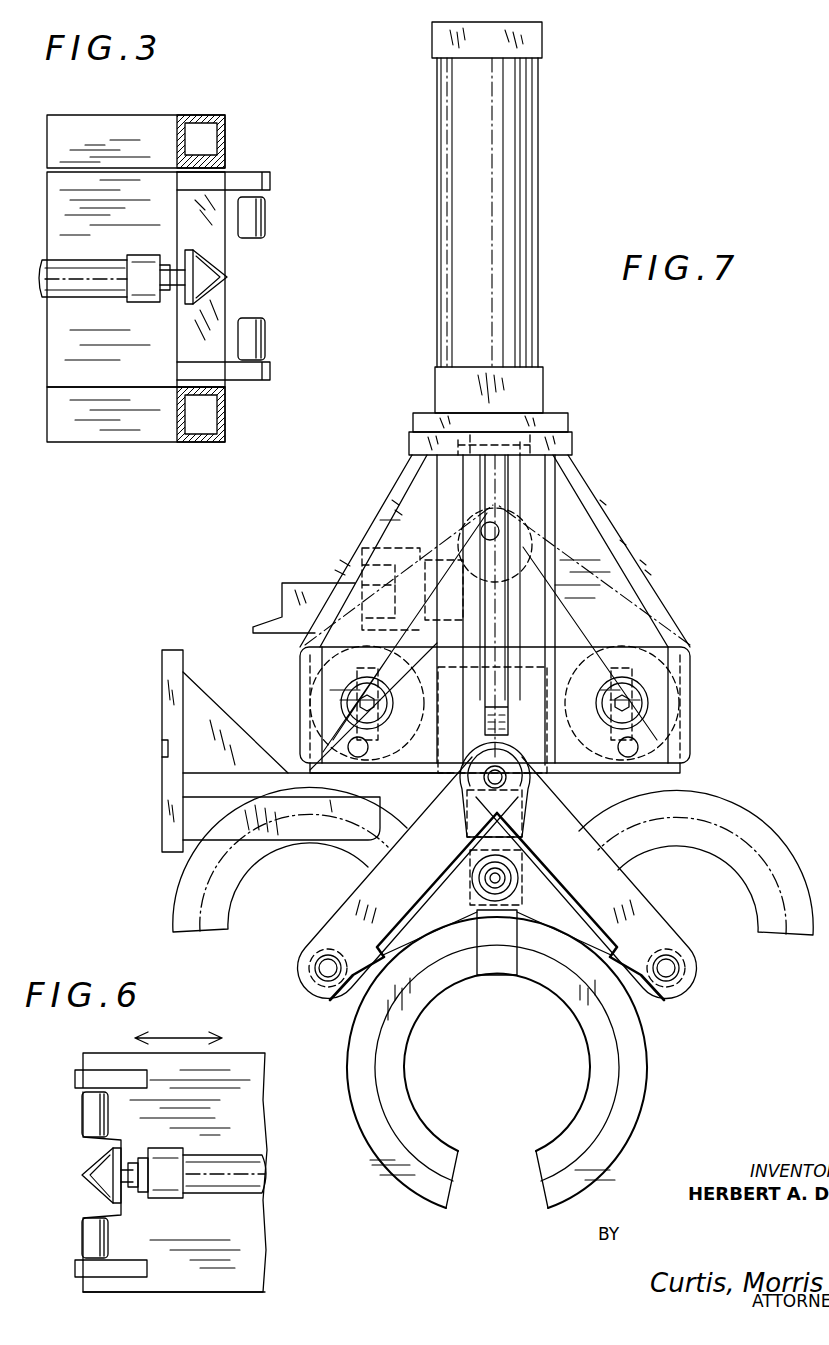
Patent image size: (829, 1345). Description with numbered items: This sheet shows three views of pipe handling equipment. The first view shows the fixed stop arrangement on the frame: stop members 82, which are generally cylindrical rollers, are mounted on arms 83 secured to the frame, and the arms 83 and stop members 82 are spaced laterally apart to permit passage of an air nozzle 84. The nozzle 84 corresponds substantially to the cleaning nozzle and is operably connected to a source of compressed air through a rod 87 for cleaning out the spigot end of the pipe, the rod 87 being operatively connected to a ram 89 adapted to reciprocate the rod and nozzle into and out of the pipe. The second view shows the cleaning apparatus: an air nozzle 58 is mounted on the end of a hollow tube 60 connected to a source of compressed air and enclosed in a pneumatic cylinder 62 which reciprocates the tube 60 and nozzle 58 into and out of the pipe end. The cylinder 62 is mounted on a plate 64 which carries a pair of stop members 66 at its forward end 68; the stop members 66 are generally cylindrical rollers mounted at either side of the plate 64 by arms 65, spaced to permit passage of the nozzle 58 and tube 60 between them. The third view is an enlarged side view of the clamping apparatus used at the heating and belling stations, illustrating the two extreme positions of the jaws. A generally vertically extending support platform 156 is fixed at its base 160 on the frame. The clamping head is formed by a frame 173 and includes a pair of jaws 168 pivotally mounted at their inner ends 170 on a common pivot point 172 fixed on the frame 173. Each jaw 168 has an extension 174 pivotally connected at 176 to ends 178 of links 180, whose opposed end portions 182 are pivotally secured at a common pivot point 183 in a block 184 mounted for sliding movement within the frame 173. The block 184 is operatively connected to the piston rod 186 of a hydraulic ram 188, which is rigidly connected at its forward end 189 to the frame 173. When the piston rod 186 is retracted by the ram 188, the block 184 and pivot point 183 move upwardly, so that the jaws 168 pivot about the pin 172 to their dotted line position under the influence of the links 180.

In FIG. 3, the arms 83 is at (262, 176).
In FIG. 3, the stop members 82 is at (265, 232).
In FIG. 3, the ram 89 is at (84, 268).
In FIG. 3, the rod 87 is at (183, 270).
In FIG. 3, the air nozzle 84 is at (193, 298).
In FIG. 6, the air nozzle 84 is at (117, 1158).
In FIG. 6, the arms 65 is at (75, 1080).
In FIG. 6, the stop members 66 is at (90, 1112).
In FIG. 6, the air nozzle 58 is at (82, 1178).
In FIG. 6, the hollow tube 60 is at (128, 1192).
In FIG. 6, the pneumatic cylinder 62 is at (243, 1165).
In FIG. 6, the plate 64 is at (242, 1268).
In FIG. 6, the forward end 68 is at (105, 1292).
In FIG. 7, the hydraulic ram 188 is at (527, 180).
In FIG. 7, the forward end 189 is at (553, 420).
In FIG. 7, the piston rod 186 is at (495, 476).
In FIG. 7, the block 184 is at (507, 712).
In FIG. 7, the frame 173 is at (690, 727).
In FIG. 7, the common pivot point 183 is at (482, 774).
In FIG. 7, the opposed end portions 182 is at (512, 783).
In FIG. 7, the base 160 is at (183, 638).
In FIG. 7, the support platform 156 is at (232, 782).
In FIG. 7, the links 180 is at (367, 890).
In FIG. 7, the ends 178 is at (327, 920).
In FIG. 7, the pivotal connection 176 is at (318, 968).
In FIG. 7, the extension 174 is at (330, 998).
In FIG. 7, the common pivot point 172 is at (472, 935).
In FIG. 7, the inner ends 170 is at (501, 942).
In FIG. 7, the jaws 168 is at (400, 1068).